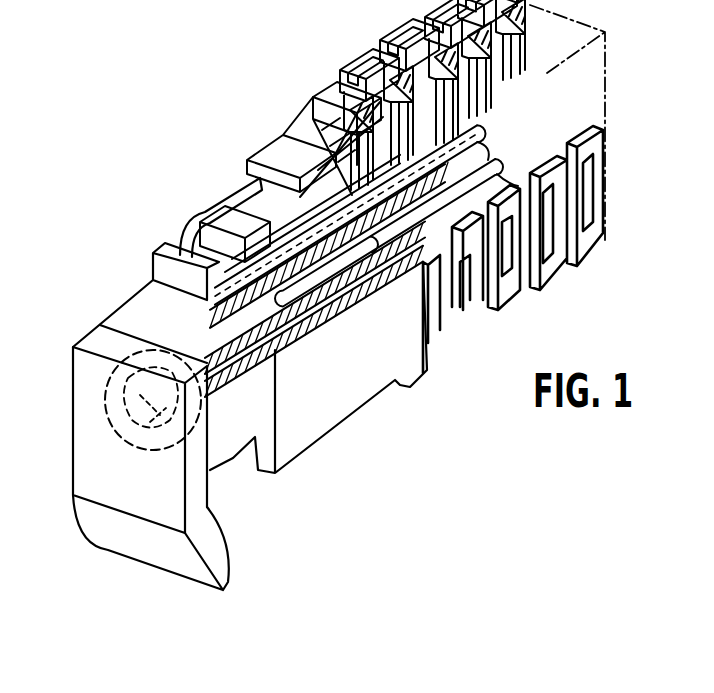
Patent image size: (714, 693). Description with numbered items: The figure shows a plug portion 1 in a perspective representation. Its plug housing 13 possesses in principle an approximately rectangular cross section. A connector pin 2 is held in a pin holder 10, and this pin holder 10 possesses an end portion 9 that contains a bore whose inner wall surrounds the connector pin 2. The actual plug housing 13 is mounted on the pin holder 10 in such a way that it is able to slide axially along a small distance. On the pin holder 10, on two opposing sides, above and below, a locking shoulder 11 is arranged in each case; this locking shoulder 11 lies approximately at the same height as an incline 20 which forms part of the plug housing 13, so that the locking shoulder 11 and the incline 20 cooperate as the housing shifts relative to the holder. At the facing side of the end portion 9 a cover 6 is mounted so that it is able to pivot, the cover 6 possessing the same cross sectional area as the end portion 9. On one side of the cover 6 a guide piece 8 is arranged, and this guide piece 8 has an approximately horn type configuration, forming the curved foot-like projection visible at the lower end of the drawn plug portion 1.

The plug portion 1 is at (166, 106).
The connector pin 2 is at (255, 388).
The cover 6 is at (80, 439).
The guide piece 8 is at (137, 553).
The end portion 9 is at (137, 312).
The pin holder 10 is at (316, 112).
The locking shoulder 11 is at (230, 218).
The plug housing 13 is at (267, 157).
The incline 20 is at (218, 192).